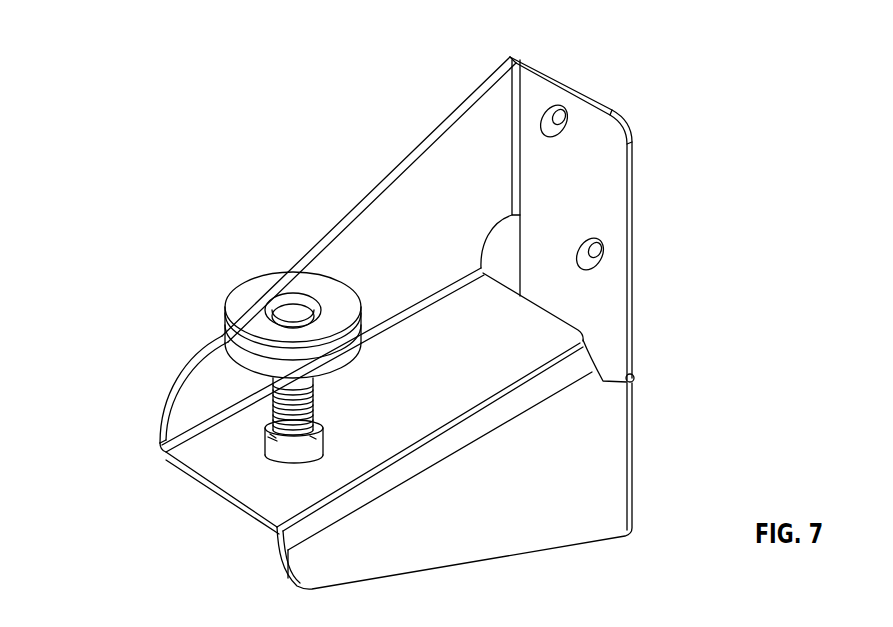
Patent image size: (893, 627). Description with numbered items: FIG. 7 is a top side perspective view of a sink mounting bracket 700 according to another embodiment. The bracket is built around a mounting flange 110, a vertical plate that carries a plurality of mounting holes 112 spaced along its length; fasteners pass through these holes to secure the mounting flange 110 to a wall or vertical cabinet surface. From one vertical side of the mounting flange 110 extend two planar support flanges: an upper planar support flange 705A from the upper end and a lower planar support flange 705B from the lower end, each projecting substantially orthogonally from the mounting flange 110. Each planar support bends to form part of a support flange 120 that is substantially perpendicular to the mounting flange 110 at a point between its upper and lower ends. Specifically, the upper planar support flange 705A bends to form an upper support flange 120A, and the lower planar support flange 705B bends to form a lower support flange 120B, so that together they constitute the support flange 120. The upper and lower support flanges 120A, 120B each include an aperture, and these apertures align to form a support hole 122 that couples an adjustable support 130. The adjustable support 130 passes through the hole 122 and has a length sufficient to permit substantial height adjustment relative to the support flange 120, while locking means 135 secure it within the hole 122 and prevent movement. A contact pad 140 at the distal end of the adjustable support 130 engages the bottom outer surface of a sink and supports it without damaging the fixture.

The mounting bracket 700 is at (142, 147).
The mounting flange 110 is at (608, 128).
The mounting hole 112 is at (585, 138).
The upper planar support flange 705A is at (425, 180).
The lower planar support flange 705B is at (562, 520).
The support flange 120 is at (150, 525).
The upper support flange 120A is at (223, 473).
The lower support flange 120B is at (232, 510).
The contact pad 140 is at (248, 297).
The adjustable support 130 is at (273, 408).
The support hole 122 is at (258, 454).
The locking means 135 is at (263, 440).